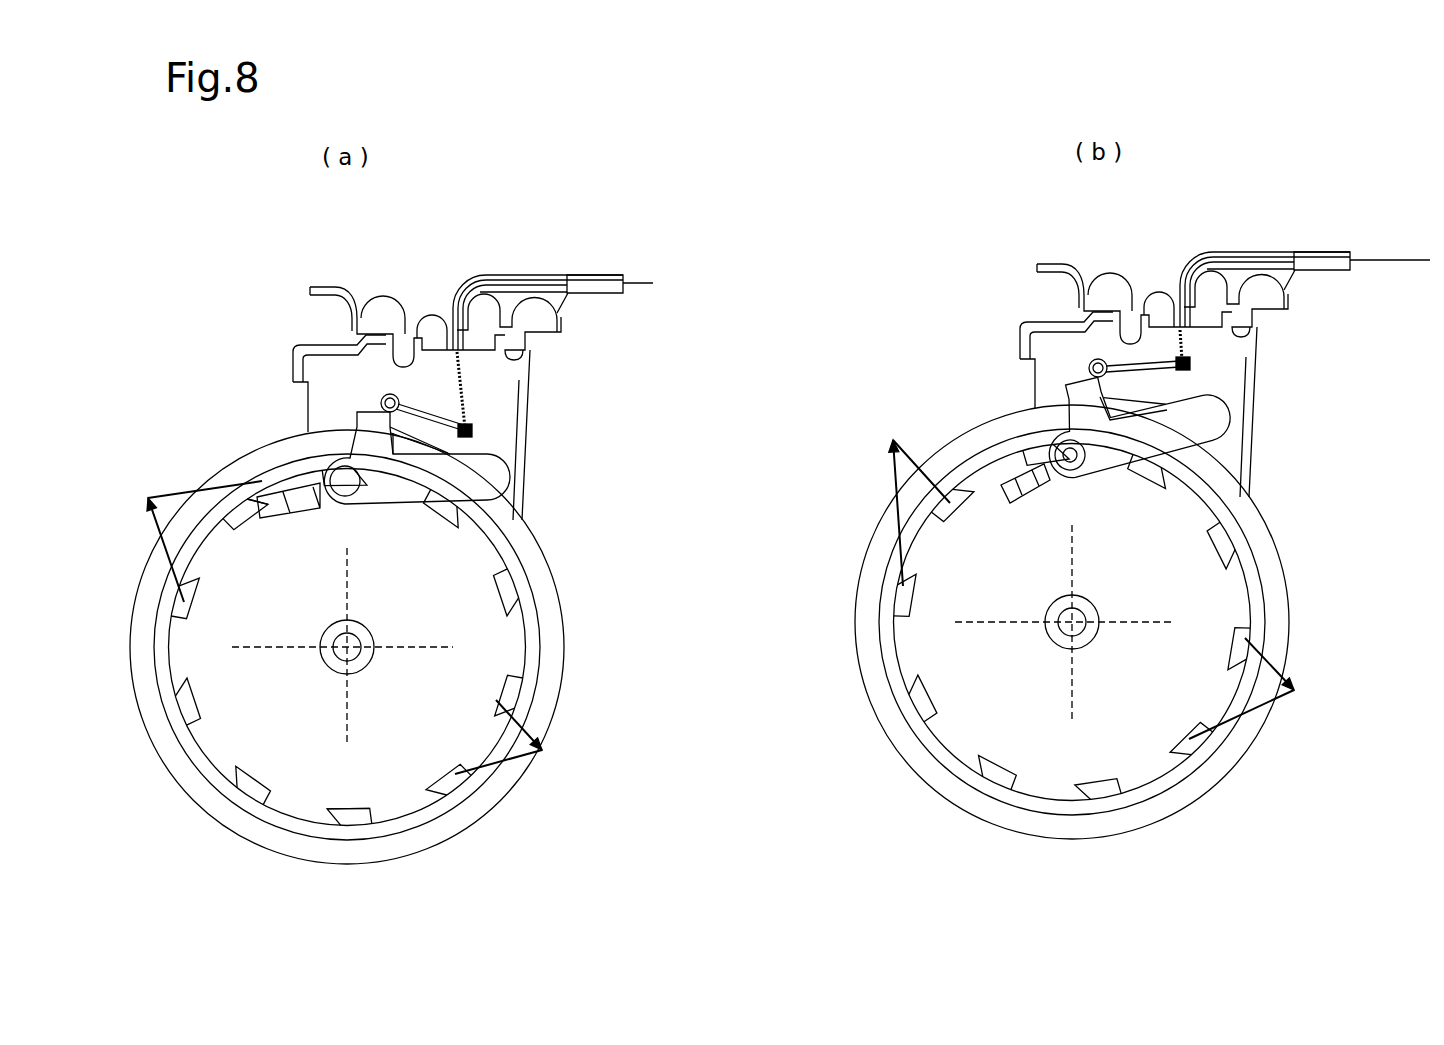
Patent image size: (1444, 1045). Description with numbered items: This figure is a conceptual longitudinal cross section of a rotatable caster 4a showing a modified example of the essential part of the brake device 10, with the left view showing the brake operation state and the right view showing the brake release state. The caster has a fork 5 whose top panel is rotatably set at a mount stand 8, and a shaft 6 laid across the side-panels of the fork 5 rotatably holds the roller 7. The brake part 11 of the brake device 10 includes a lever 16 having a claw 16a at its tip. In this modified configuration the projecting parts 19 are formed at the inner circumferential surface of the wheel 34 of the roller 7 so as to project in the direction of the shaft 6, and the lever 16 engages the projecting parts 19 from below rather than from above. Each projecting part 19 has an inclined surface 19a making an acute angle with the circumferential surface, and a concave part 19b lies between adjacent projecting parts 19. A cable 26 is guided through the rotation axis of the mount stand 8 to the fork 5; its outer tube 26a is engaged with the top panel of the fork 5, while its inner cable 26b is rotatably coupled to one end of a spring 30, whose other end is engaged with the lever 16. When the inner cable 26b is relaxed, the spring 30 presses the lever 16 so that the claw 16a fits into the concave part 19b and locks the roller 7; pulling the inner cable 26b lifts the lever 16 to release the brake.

The rotatable caster 4a is at (268, 425).
The fork 5 is at (340, 378).
The shaft 6 is at (340, 655).
The roller 7 is at (207, 805).
The mount stand 8 is at (344, 287).
The brake device 10 is at (522, 468).
The brake part 11 is at (870, 426).
The lever 16 is at (383, 479).
The claw 16a is at (266, 500).
The projecting part 19 is at (710, 592).
The inclined surface 19a is at (256, 497).
The concave part 19b is at (398, 806).
The cable 26 is at (526, 282).
The outer tube 26a is at (472, 386).
The inner cable 26b is at (1192, 352).
The spring 30 is at (428, 424).
The wheel 34 is at (422, 733).